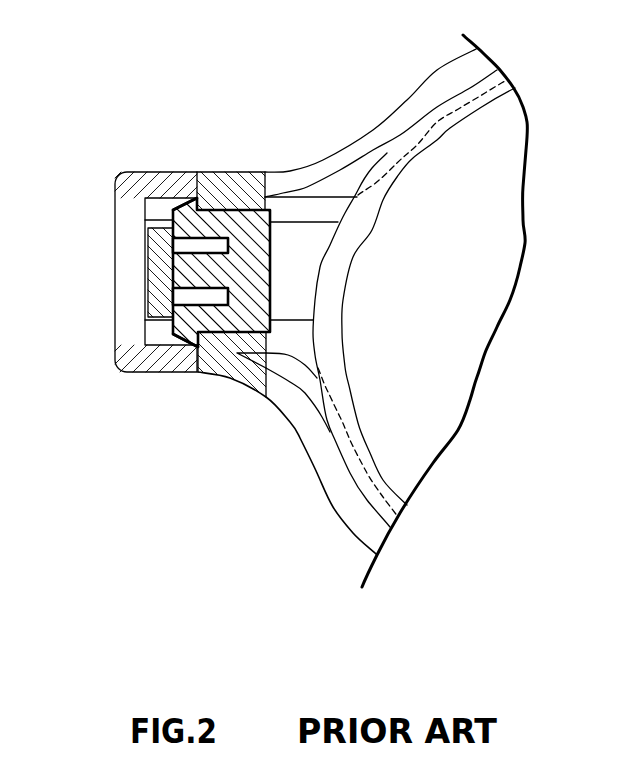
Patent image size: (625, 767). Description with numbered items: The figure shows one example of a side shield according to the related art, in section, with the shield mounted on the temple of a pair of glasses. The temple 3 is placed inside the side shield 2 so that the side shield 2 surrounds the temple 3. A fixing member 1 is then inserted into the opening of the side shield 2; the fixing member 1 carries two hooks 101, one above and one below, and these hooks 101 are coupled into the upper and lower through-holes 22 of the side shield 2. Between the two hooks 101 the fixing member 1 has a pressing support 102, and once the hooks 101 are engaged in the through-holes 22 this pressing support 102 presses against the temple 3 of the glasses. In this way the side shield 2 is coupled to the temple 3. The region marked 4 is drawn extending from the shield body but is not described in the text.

The fixing member 1 is at (265, 267).
The side shield 2 is at (120, 328).
The temple 3 is at (153, 273).
The diaphragm cone 4 is at (477, 103).
The through-holes 22 is at (191, 173).
The hooks 101 is at (185, 203).
The pressing support 102 is at (150, 249).